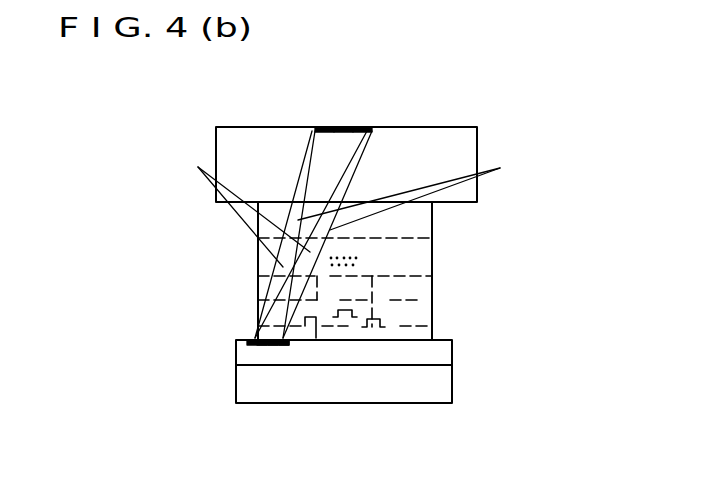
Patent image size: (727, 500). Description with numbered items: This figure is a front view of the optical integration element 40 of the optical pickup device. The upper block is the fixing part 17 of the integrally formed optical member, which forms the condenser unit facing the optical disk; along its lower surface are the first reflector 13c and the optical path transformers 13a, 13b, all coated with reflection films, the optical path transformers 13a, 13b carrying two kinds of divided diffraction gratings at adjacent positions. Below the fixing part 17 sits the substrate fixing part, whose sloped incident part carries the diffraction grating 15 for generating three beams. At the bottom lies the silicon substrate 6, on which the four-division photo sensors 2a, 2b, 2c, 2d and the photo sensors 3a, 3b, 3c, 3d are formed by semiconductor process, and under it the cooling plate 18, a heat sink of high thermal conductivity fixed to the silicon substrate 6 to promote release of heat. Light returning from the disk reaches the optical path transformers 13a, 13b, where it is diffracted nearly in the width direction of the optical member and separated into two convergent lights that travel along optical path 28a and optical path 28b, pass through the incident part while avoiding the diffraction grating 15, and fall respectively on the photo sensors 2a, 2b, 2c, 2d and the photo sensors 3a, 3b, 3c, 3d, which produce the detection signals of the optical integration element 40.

The optical path transformer 13a is at (320, 125).
The optical path transformer 13b is at (341, 125).
The first reflector 13c is at (360, 125).
The fixing part 17 is at (448, 135).
The optical path 28a is at (227, 209).
The optical path 28b is at (426, 191).
The diffraction grating 15 is at (358, 265).
The optical integration element 40 is at (456, 307).
The silicon substrate 6 is at (442, 355).
The cooling plate 18 is at (443, 395).
The photo sensor 2a is at (253, 346).
The photo sensor 2b is at (262, 342).
The photo sensor 2c is at (273, 342).
The photo sensor 2d is at (284, 342).
The photo sensor 3a is at (278, 348).
The photo sensor 3b is at (262, 342).
The photo sensor 3c is at (273, 342).
The photo sensor 3d is at (284, 342).